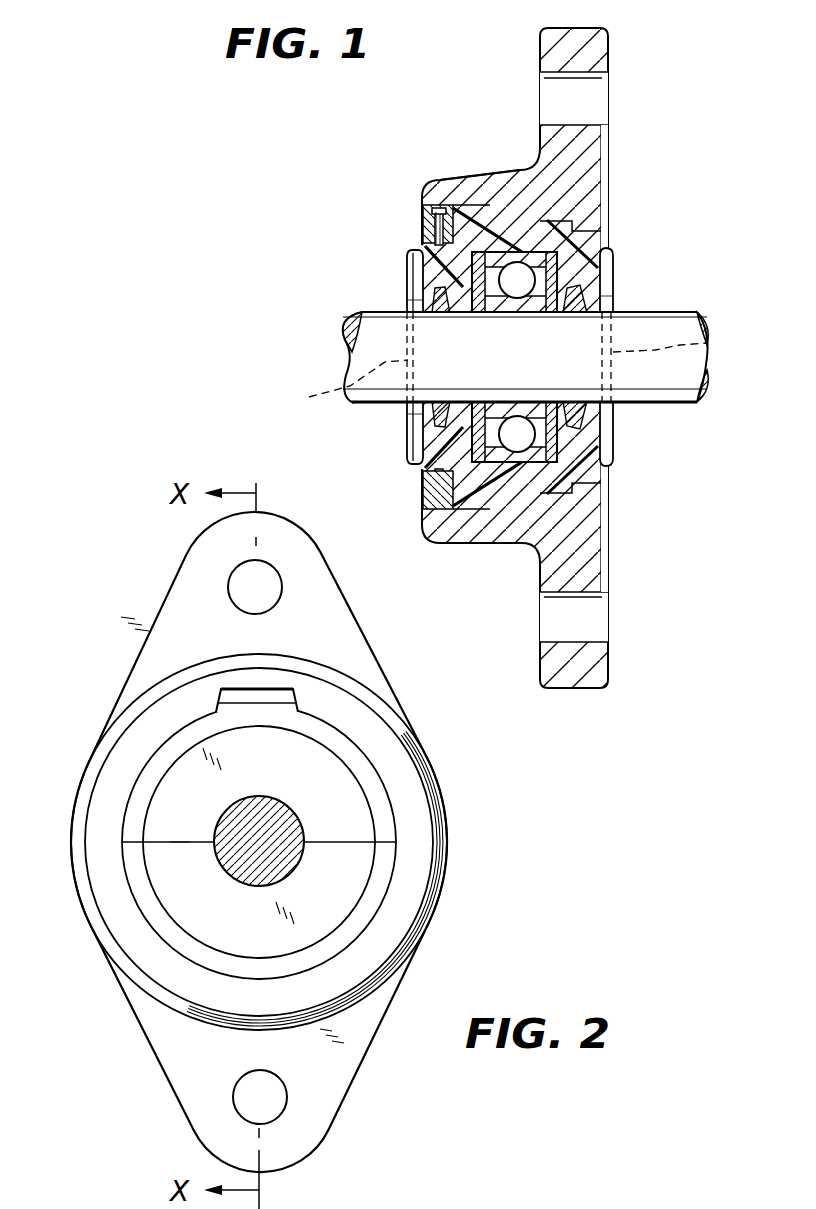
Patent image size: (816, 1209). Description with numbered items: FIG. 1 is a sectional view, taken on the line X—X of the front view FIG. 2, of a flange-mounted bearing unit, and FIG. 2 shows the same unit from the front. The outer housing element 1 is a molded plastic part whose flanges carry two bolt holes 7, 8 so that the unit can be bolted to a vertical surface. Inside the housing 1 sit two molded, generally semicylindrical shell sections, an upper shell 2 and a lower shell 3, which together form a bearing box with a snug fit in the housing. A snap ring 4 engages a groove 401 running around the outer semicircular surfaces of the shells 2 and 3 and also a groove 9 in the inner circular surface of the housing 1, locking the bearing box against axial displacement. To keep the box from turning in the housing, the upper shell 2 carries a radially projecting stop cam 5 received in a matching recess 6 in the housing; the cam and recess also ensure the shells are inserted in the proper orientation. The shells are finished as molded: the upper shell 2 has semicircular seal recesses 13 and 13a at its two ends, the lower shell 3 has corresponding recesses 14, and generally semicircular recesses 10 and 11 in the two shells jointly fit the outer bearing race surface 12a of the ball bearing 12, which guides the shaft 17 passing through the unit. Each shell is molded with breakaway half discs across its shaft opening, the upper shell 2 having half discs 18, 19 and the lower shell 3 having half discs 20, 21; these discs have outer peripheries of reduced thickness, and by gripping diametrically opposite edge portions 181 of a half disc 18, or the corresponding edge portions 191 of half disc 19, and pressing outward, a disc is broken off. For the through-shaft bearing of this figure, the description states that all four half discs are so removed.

In FIG. 1, the outer housing element 1 is at (597, 48).
In FIG. 2, the outer housing element 1 is at (160, 658).
In FIG. 1, the upper shell section 2 is at (520, 232).
In FIG. 2, the upper shell section 2 is at (392, 765).
In FIG. 1, the lower shell section 3 is at (502, 488).
In FIG. 2, the lower shell section 3 is at (343, 933).
In FIG. 1, the snap ring 4 is at (420, 207).
In FIG. 2, the snap ring 4 is at (294, 700).
In FIG. 1, the groove 401 is at (432, 239).
In FIG. 1, the stop cam 5 is at (476, 211).
In FIG. 1, the recess 6 is at (450, 185).
In FIG. 2, the recess 6 is at (232, 687).
In FIG. 1, the bolt hole 7 is at (556, 93).
In FIG. 2, the bolt hole 7 is at (240, 583).
In FIG. 1, the bolt hole 8 is at (600, 620).
In FIG. 2, the bolt hole 8 is at (240, 1096).
In FIG. 1, the groove 9 is at (432, 502).
In FIG. 1, the semicircular recess 10 is at (567, 280).
In FIG. 1, the semicircular recess 11 is at (462, 490).
In FIG. 1, the ball bearing 12 is at (514, 420).
In FIG. 1, the outer bearing race surface 12a is at (537, 462).
In FIG. 1, the semicircular seal recess 13 is at (428, 293).
In FIG. 1, the semicircular seal recess 13a is at (599, 293).
In FIG. 1, the seal recesses 14 is at (427, 432).
In FIG. 1, the shaft 17 is at (371, 363).
In FIG. 2, the shaft 17 is at (285, 858).
In FIG. 1, the half disc 18 is at (404, 306).
In FIG. 2, the half disc 18 is at (160, 800).
In FIG. 1, the edge portions 181 is at (348, 382).
In FIG. 2, the edge portions 181 is at (357, 842).
In FIG. 1, the half disc 19 is at (618, 304).
In FIG. 1, the right slinger bore line 191 is at (703, 347).
In FIG. 1, the half disc 20 is at (410, 420).
In FIG. 2, the half disc 20 is at (160, 875).
In FIG. 1, the half disc 21 is at (618, 421).